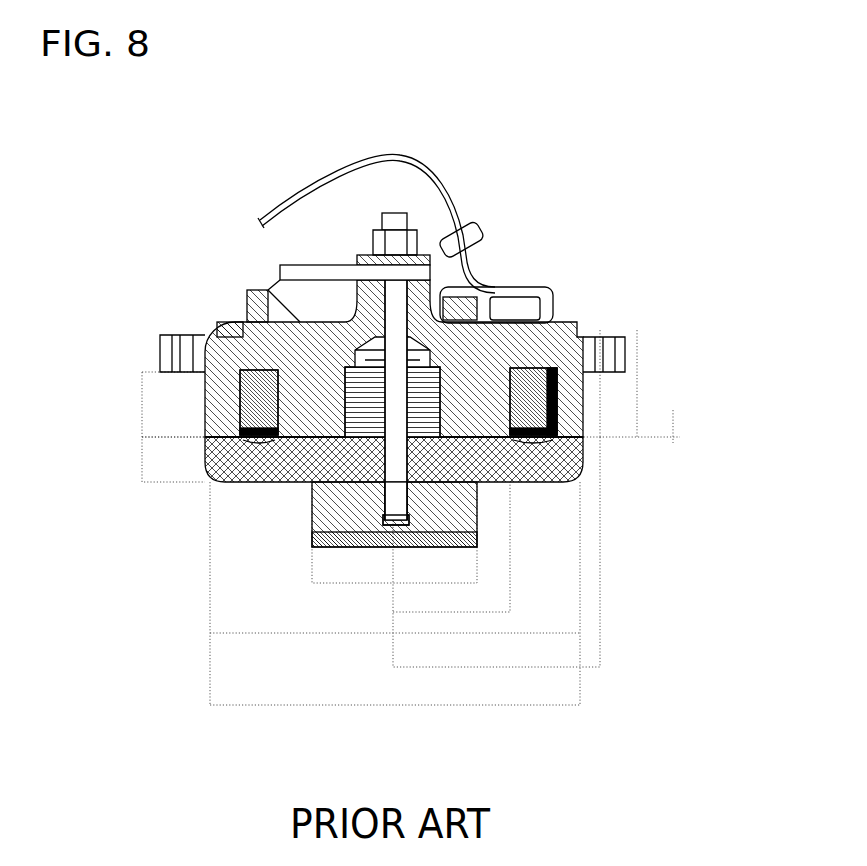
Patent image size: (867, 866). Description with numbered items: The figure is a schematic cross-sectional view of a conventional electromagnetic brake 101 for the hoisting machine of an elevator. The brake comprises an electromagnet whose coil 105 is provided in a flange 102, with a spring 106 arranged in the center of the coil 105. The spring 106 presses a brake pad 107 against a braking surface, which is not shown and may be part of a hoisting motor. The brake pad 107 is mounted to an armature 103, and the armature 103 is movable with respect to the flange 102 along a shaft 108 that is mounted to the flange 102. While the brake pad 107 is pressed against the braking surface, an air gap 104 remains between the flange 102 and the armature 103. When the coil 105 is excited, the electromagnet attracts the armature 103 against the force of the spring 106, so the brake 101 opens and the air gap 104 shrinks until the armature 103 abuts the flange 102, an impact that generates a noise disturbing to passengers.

The electromagnetic brake 101 is at (575, 303).
The flange 102 is at (570, 395).
The armature 103 is at (560, 463).
The air gap 104 is at (577, 438).
The coil 105 is at (262, 388).
The spring 106 is at (430, 366).
The brake pad 107 is at (463, 513).
The shaft 108 is at (400, 298).